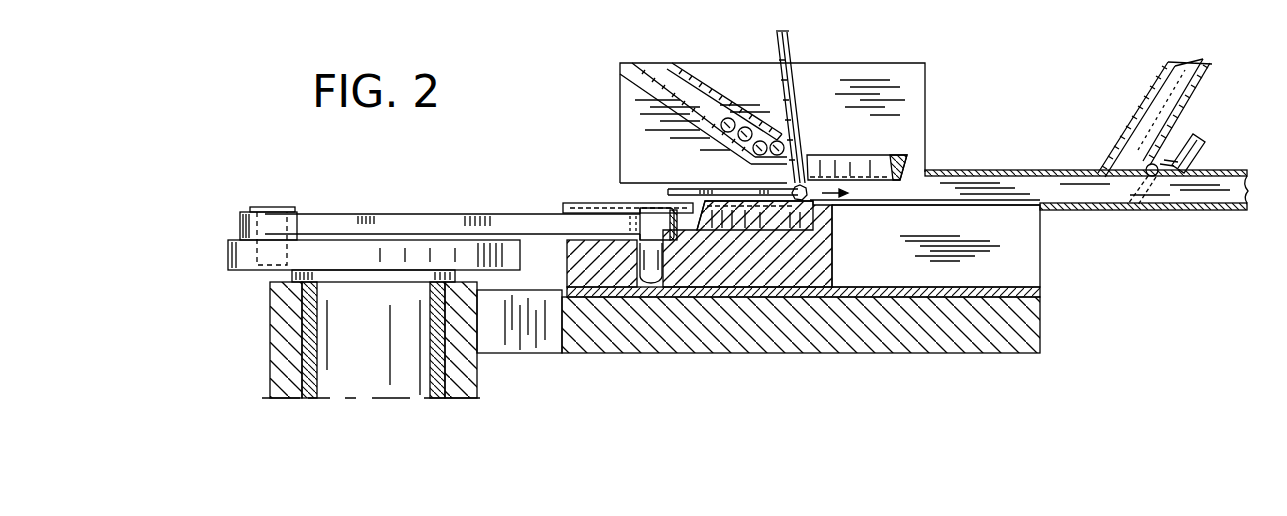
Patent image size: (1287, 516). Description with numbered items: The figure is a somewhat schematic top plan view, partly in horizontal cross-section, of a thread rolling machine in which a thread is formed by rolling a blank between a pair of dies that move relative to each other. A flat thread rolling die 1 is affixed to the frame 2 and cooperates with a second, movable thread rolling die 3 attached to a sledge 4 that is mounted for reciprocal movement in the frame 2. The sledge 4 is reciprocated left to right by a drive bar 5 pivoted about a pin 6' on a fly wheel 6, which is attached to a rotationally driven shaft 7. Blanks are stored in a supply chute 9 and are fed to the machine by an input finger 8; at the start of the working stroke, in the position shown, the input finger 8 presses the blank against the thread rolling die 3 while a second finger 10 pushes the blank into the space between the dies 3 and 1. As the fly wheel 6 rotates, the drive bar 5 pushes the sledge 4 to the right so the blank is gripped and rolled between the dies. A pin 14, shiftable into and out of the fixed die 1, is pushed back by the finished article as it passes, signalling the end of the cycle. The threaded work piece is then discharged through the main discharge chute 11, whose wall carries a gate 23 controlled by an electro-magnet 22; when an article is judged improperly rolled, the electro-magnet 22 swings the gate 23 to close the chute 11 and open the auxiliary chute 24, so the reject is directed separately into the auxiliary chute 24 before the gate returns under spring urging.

The flat thread rolling die 1 is at (846, 162).
The frame 2 is at (965, 352).
The movable thread rolling die 3 is at (832, 223).
The sledge 4 is at (790, 260).
The drive bar 5 is at (503, 220).
The fly wheel 6 is at (374, 232).
The pin 6' is at (268, 215).
The rotationally driven shaft 7 is at (340, 332).
The input finger 8 is at (787, 44).
The supply chute 9 is at (665, 88).
The second finger 10 is at (681, 188).
The main discharge chute 11 is at (1008, 172).
The pin 14 is at (908, 158).
The electro-magnet 22 is at (1200, 140).
The gate 23 is at (1128, 168).
The auxiliary chute 24 is at (1147, 93).